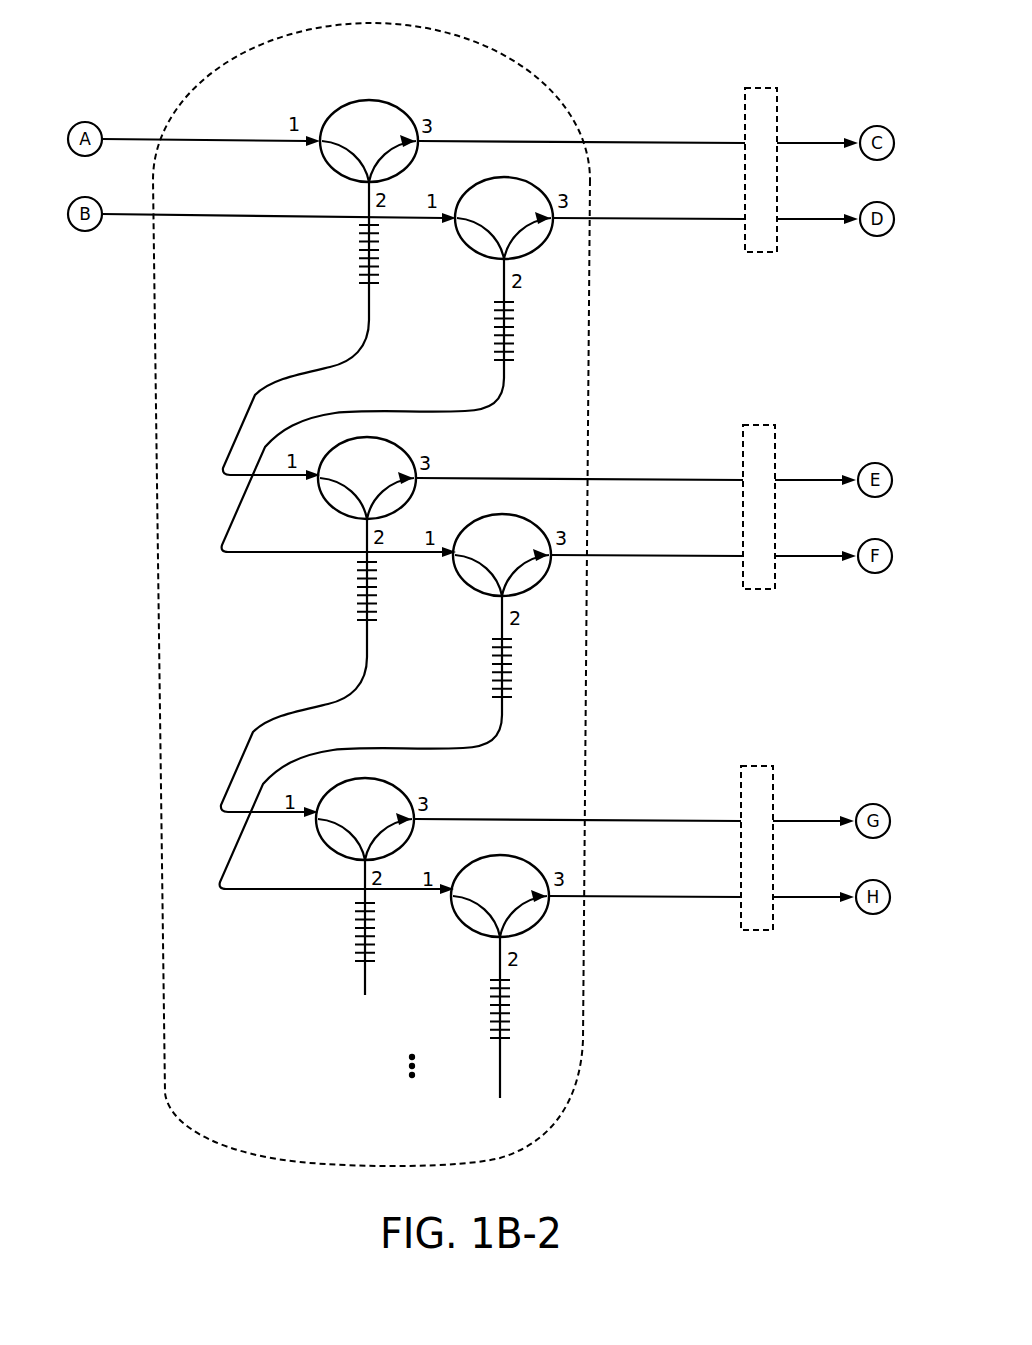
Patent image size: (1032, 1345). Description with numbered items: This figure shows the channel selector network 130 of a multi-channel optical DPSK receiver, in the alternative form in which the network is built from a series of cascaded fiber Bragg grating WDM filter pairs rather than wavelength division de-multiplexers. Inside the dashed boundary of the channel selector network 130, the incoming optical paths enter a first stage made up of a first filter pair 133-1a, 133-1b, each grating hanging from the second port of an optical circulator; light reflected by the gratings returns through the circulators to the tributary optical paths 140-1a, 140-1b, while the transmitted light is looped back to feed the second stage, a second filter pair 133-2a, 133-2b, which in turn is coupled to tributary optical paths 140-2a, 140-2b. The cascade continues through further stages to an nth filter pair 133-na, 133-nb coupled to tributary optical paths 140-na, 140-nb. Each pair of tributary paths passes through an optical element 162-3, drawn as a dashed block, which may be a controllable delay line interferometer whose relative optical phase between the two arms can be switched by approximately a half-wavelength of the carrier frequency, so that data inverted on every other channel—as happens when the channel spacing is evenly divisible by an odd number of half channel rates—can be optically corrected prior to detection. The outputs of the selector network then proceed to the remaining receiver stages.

The channel selector network 130 is at (152, 312).
The fiber Bragg grating WDM filter 133-1a is at (350, 271).
The fiber Bragg grating WDM filter 133-1b is at (485, 352).
The fiber Bragg grating WDM filter 133-2a is at (314, 668).
The fiber Bragg grating WDM filter 133-2b is at (381, 745).
The fiber Bragg grating WDM filter 133-na is at (319, 927).
The fiber Bragg grating WDM filter 133-nb is at (455, 1017).
The tributary optical path 140-1a is at (660, 141).
The tributary optical path 140-1b is at (660, 217).
The tributary optical path 140-2a is at (636, 454).
The tributary optical path 140-2b is at (703, 529).
The tributary optical path 140-na is at (634, 795).
The tributary optical path 140-nb is at (701, 870).
The optical element 162-3 is at (759, 254).